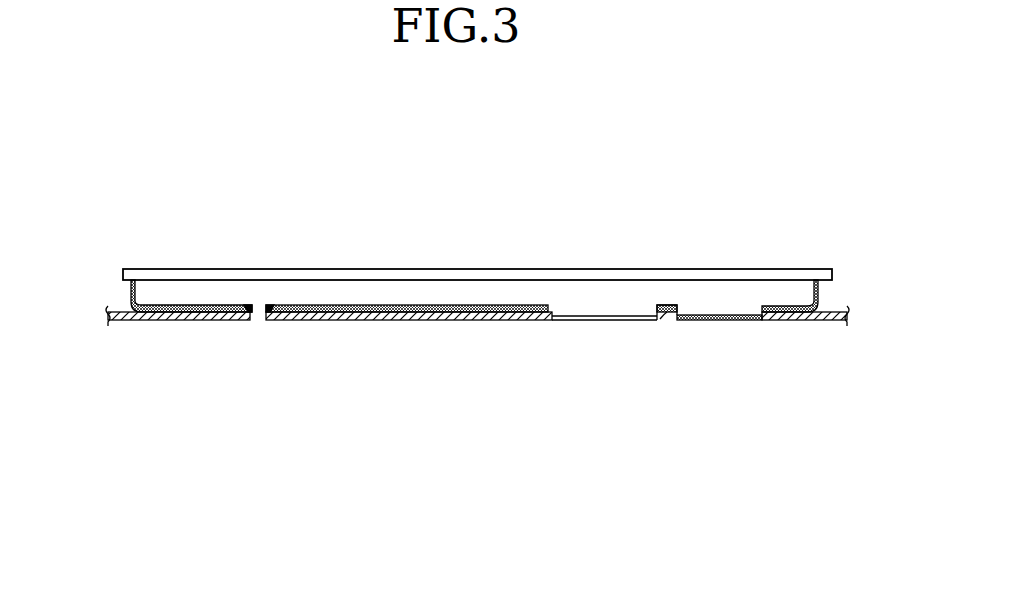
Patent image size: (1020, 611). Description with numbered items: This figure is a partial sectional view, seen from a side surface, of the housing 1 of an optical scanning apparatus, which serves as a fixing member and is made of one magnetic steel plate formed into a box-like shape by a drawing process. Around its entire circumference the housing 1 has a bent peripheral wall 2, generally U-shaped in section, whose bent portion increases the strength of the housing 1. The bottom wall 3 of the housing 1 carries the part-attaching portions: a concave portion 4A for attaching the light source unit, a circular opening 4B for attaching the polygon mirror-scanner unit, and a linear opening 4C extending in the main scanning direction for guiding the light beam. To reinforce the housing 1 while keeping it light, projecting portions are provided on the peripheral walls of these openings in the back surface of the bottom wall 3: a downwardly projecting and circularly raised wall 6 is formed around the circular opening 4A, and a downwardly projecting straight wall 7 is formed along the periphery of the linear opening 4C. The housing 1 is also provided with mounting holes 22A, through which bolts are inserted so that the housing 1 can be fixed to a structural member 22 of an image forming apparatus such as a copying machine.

The housing 1 is at (650, 253).
The peripheral wall 2 is at (564, 284).
The bottom wall 3 is at (410, 305).
The concave portion 4A is at (717, 313).
The circular opening 4B is at (607, 312).
The linear opening 4C is at (258, 318).
The circularly raised wall 6 is at (670, 313).
The straight wall 7 is at (243, 318).
The structural member 22 is at (795, 313).
The mounting holes 22A is at (160, 306).